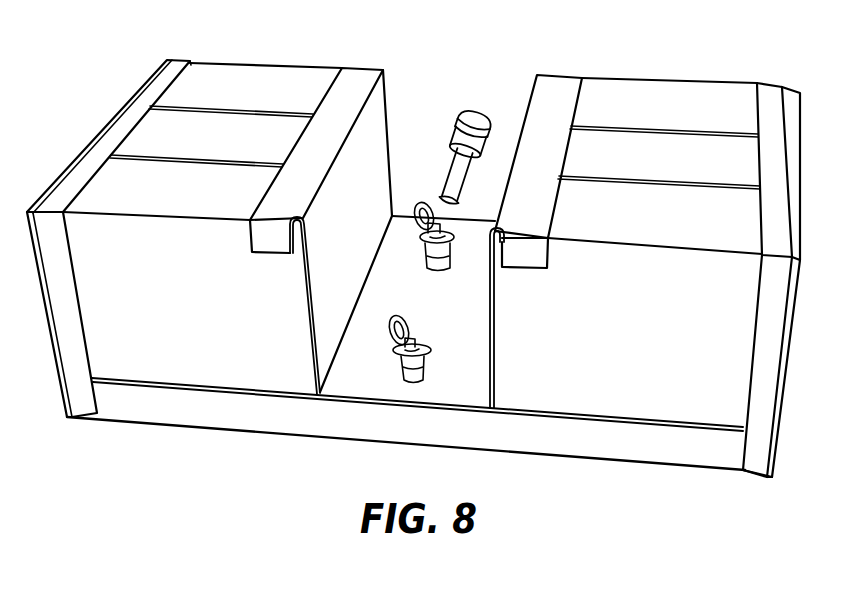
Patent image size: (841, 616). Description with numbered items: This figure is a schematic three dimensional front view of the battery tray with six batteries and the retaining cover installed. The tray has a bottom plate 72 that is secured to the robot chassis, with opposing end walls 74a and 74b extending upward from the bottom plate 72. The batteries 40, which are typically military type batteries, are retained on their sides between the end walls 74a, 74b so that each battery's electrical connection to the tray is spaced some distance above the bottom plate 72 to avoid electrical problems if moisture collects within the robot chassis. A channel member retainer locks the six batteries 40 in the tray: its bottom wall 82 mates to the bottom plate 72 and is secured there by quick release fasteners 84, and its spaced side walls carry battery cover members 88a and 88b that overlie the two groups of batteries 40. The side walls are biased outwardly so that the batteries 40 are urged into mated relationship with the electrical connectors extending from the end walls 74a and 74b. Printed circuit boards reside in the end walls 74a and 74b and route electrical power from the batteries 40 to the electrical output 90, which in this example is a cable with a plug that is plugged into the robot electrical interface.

The battery 40 is at (264, 103).
The bottom plate 72 is at (208, 418).
The left end wall 74a is at (105, 127).
The right end wall 74b is at (787, 92).
The bottom wall 82 is at (477, 385).
The quick release fastener 84 is at (431, 265).
The battery cover member 88a is at (358, 78).
The battery cover member 88b is at (563, 83).
The electrical output 90 is at (463, 121).